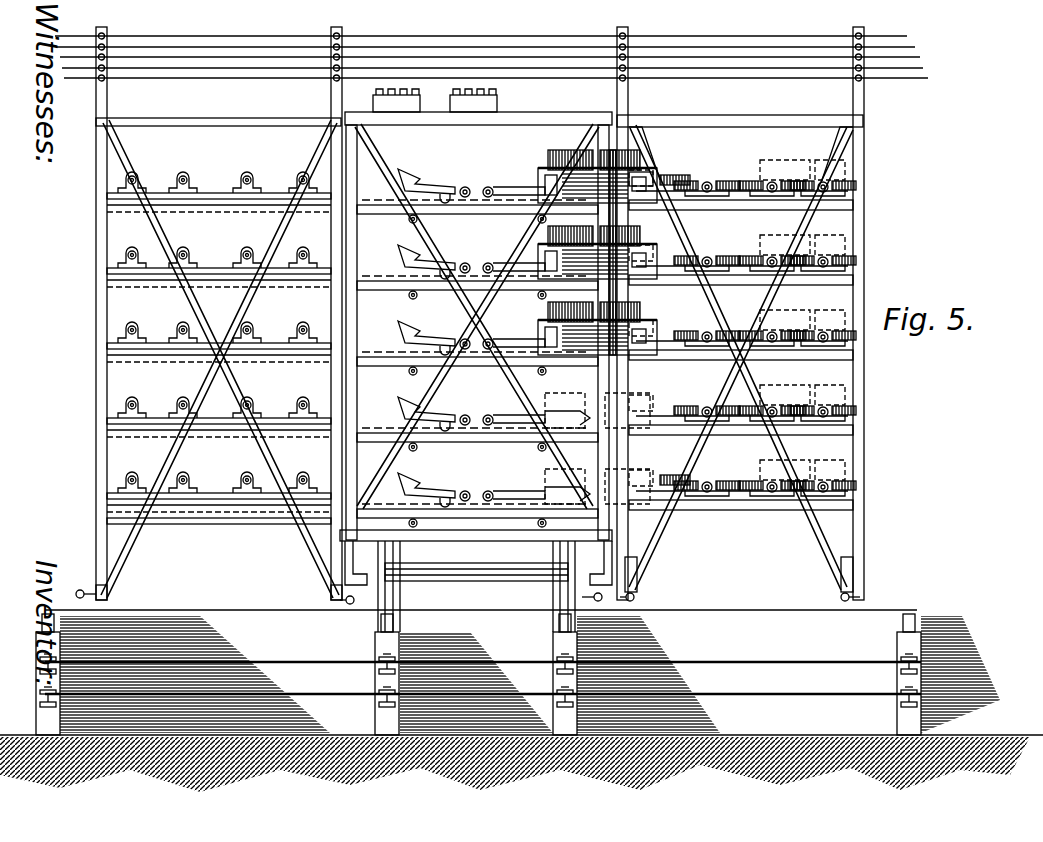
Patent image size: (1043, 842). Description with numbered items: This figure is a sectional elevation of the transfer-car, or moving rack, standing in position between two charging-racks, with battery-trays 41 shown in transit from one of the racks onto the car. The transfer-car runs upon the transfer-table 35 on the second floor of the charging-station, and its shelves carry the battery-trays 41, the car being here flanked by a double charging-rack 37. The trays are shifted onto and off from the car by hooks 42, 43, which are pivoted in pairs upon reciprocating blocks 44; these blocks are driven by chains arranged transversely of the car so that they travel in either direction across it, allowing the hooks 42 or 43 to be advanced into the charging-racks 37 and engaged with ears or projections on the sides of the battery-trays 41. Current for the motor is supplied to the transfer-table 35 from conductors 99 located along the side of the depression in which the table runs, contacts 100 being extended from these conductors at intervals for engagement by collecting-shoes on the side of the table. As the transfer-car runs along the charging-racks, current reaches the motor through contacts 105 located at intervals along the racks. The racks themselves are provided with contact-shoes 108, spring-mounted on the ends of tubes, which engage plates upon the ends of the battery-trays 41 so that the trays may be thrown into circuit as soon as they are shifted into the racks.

The transfer-table 35 is at (578, 106).
The double charging-rack 37 is at (97, 277).
The battery-trays 41 is at (536, 178).
The hook 42 is at (464, 246).
The hook 43 is at (507, 260).
The reciprocating blocks 44 is at (468, 184).
The conductors 99 is at (921, 660).
The contacts 100 is at (372, 676).
The contacts 105 is at (82, 592).
The contact-shoes 108 is at (695, 180).